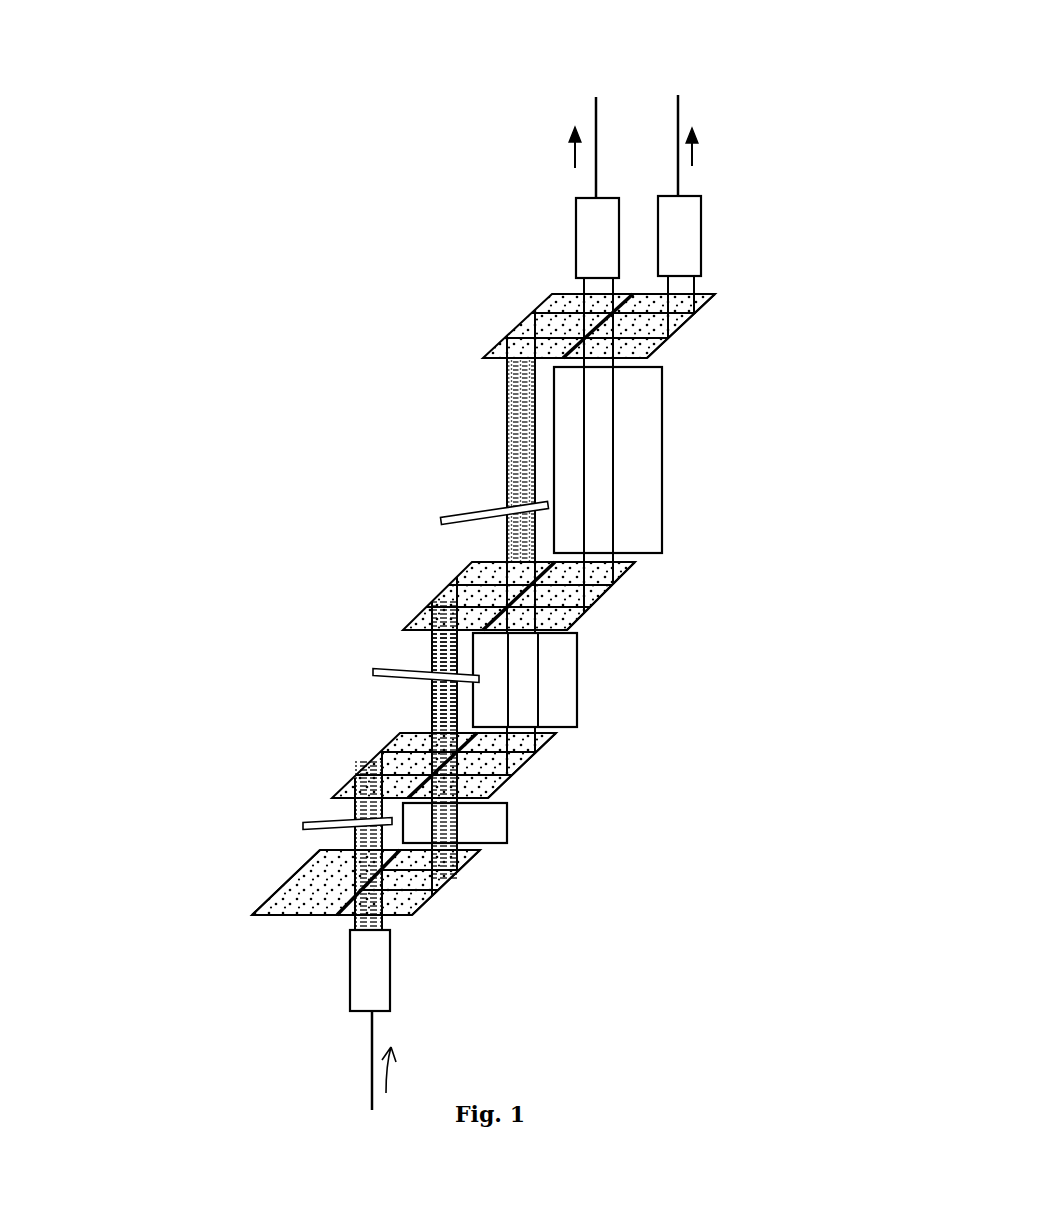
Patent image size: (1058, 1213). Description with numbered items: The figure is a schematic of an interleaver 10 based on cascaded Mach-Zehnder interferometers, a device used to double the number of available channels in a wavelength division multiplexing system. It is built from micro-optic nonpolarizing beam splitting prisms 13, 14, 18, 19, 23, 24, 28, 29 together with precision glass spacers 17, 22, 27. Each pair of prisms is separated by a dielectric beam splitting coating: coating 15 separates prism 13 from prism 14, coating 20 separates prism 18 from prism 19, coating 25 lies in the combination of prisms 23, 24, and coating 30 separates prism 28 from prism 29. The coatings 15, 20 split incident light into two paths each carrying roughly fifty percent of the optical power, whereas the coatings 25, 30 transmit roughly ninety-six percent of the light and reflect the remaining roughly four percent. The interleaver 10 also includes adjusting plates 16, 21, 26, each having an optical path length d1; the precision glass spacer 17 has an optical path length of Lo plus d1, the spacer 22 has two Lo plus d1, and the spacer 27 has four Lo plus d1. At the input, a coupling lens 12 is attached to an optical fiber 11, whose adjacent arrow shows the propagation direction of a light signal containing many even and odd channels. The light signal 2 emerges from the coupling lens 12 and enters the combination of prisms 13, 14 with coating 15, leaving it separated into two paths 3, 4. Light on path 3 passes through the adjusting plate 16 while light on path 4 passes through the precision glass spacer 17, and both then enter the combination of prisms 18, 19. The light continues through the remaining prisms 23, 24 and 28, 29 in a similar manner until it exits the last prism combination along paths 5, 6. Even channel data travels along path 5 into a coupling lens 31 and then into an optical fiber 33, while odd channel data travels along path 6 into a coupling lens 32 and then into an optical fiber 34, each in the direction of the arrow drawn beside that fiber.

The light signal 2 is at (352, 927).
The path 3 is at (320, 850).
The path 4 is at (480, 855).
The path 5 is at (580, 287).
The path 6 is at (698, 285).
The interleaver 10 is at (298, 352).
The optical fiber 11 is at (370, 1078).
The coupling lens 12 is at (348, 975).
The nonpolarizing beam splitting prism 13 is at (272, 893).
The nonpolarizing beam splitting prism 14 is at (430, 905).
The dielectric beam splitting coating 15 is at (330, 860).
The adjusting plate 16 is at (313, 822).
The precision glass spacer 17 is at (508, 823).
The nonpolarizing beam splitting prism 18 is at (398, 733).
The nonpolarizing beam splitting prism 19 is at (497, 793).
The dielectric beam splitting coating 20 is at (528, 766).
The adjusting plate 21 is at (372, 668).
The precision glass spacer 22 is at (578, 682).
The nonpolarizing beam splitting prism 23 is at (405, 625).
The nonpolarizing beam splitting prism 24 is at (570, 630).
The dielectric beam splitting coating 25 is at (633, 568).
The adjusting plate 26 is at (440, 522).
The precision glass spacer 27 is at (663, 470).
The nonpolarizing beam splitting prism 28 is at (493, 355).
The nonpolarizing beam splitting prism 29 is at (648, 357).
The dielectric beam splitting coating 30 is at (550, 297).
The coupling lens 31 is at (573, 230).
The coupling lens 32 is at (703, 230).
The optical fiber 33 is at (597, 117).
The optical fiber 34 is at (683, 105).